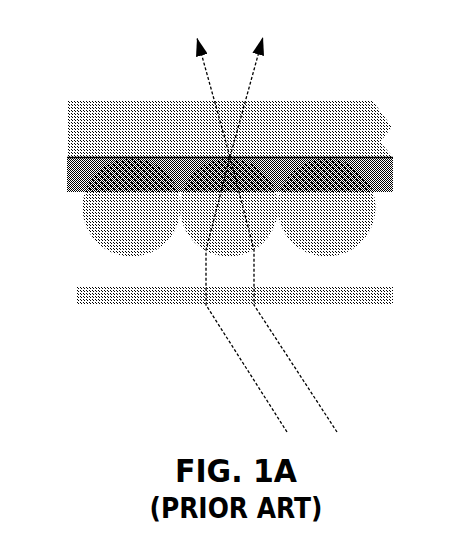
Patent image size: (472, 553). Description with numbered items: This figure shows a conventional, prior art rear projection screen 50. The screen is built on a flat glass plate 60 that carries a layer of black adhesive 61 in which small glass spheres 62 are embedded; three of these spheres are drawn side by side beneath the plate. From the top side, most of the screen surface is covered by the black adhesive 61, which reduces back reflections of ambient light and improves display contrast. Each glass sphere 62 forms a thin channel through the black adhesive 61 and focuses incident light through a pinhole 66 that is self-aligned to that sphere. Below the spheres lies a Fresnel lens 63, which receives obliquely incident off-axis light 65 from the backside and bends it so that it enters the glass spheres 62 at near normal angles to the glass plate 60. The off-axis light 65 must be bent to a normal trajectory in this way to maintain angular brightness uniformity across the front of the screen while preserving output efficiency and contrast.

The rear projection screen 50 is at (392, 58).
The glass plate 60 is at (311, 136).
The black adhesive 61 is at (212, 174).
The glass spheres 62 is at (121, 216).
The Fresnel lens 63 is at (235, 286).
The off-axis light 65 is at (276, 294).
The pinhole 66 is at (230, 157).